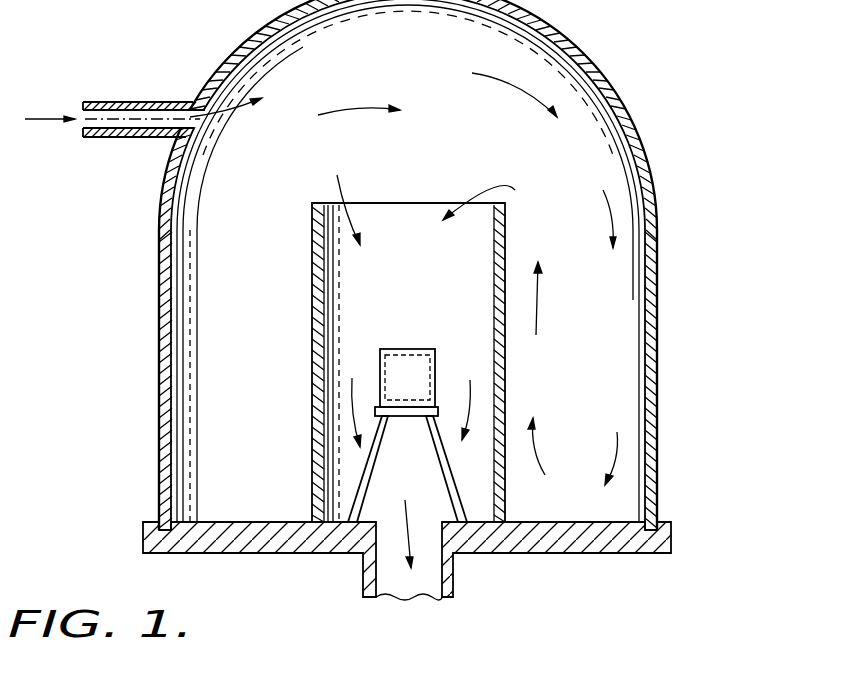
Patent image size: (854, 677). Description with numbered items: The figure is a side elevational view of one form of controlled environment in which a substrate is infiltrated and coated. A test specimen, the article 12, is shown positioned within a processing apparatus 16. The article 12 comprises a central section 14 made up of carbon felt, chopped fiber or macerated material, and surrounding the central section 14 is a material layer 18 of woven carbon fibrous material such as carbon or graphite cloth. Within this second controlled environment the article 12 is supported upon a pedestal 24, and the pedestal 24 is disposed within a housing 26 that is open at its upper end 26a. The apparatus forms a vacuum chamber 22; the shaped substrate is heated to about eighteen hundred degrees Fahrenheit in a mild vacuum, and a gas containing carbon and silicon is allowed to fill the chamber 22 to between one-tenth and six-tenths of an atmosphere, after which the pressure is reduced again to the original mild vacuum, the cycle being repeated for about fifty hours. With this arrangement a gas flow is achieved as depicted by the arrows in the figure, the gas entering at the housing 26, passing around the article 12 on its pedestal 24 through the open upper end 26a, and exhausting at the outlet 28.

The processing apparatus 16 is at (603, 46).
The chamber 22 is at (560, 167).
The housing 26 is at (124, 118).
The open upper end 26a is at (417, 205).
The article 12 is at (400, 338).
The central section 14 is at (407, 372).
The material layer 18 is at (436, 368).
The pedestal 24 is at (453, 468).
The exhaust 28 is at (430, 587).